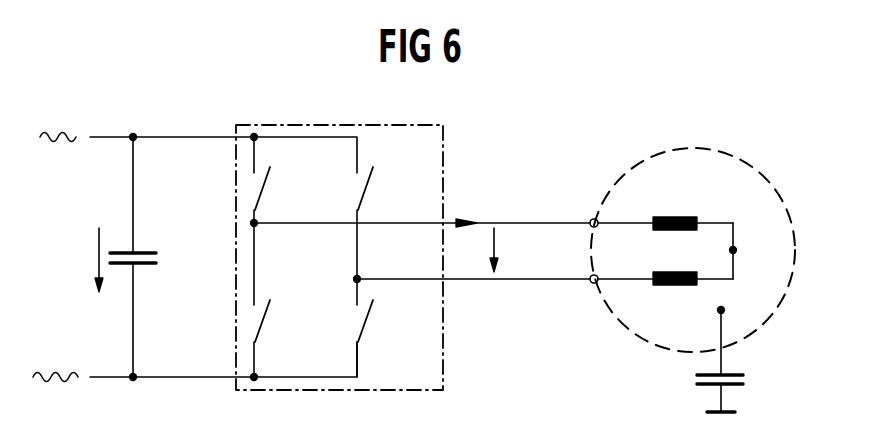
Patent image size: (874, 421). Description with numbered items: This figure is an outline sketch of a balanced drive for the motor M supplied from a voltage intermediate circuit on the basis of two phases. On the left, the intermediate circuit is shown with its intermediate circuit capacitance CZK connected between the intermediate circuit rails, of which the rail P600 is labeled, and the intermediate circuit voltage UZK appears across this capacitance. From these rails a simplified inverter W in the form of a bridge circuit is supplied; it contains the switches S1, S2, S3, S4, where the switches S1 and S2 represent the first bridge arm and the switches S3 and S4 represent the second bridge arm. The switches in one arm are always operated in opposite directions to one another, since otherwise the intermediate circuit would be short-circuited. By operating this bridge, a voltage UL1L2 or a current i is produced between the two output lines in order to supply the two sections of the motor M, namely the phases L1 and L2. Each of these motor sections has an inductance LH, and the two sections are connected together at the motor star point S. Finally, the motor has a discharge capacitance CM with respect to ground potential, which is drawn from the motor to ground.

The intermediate circuit rail P600 is at (130, 241).
The intermediate circuit voltage UZK is at (76, 260).
The intermediate circuit capacitance CZK is at (158, 256).
The inverter W is at (443, 312).
The switch S1 is at (272, 190).
The switch S2 is at (272, 326).
The switch S3 is at (375, 190).
The switch S4 is at (375, 326).
The current i is at (466, 209).
The voltage between phases L1 and L2 UL1L2 is at (530, 250).
The phase L1 is at (592, 218).
The phase L2 is at (593, 284).
The motor M is at (745, 158).
The inductance LH is at (669, 312).
The motor star point S is at (737, 250).
The discharge capacitance CM is at (745, 378).